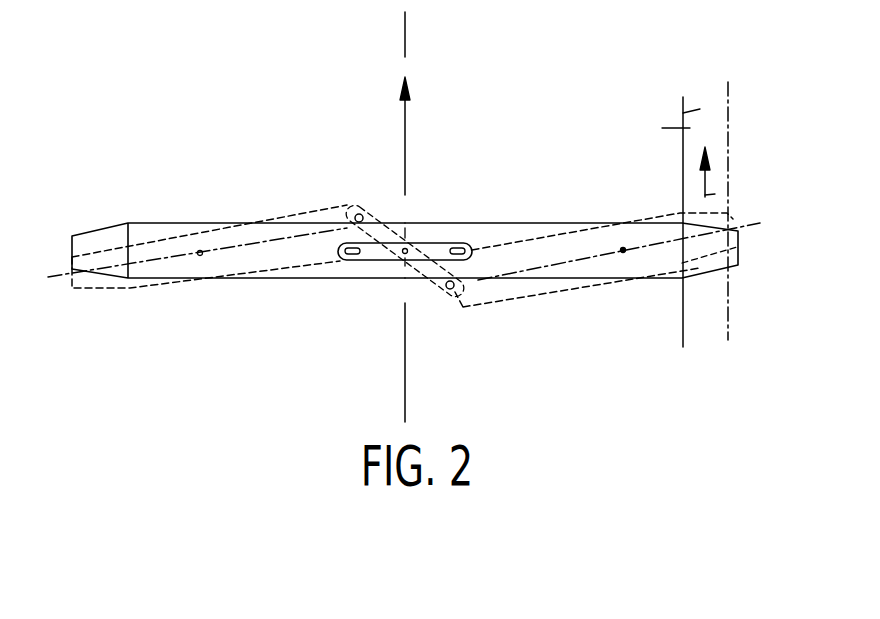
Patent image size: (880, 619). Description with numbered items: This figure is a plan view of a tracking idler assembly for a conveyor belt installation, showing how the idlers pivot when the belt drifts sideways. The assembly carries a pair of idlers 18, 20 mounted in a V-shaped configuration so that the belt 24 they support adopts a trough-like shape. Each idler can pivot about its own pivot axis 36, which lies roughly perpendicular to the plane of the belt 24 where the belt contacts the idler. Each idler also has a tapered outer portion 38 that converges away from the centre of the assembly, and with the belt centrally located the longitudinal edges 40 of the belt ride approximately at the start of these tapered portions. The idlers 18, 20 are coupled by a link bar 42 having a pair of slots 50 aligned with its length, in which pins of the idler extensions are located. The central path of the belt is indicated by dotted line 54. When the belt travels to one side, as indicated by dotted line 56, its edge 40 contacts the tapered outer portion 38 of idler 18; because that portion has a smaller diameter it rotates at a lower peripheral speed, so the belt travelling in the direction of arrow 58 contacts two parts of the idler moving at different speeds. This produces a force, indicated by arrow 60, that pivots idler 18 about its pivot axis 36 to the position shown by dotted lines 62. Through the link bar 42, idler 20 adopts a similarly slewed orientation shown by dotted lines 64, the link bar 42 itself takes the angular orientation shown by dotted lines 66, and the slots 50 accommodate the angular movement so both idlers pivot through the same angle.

The idler 18 is at (645, 278).
The idler 20 is at (266, 281).
The belt 24 is at (662, 128).
The pivot axis 36 is at (200, 250).
The tapered outer portion 38 is at (707, 273).
The longitudinal edge of the belt 40 is at (683, 113).
The link bar 42 is at (363, 214).
The slot 50 is at (350, 261).
The central path of the belt 54 is at (407, 40).
The dotted line indicating belt travel to one side 56 is at (729, 167).
The arrow indicating belt direction 58 is at (408, 111).
The arrow indicating force on idler 60 is at (705, 195).
The dotted lines indicating pivoted position of idler 18 62 is at (523, 300).
The dotted lines indicating slewed orientation of idler 20 64 is at (276, 213).
The dotted lines indicating angular orientation of link bar 66 is at (447, 289).